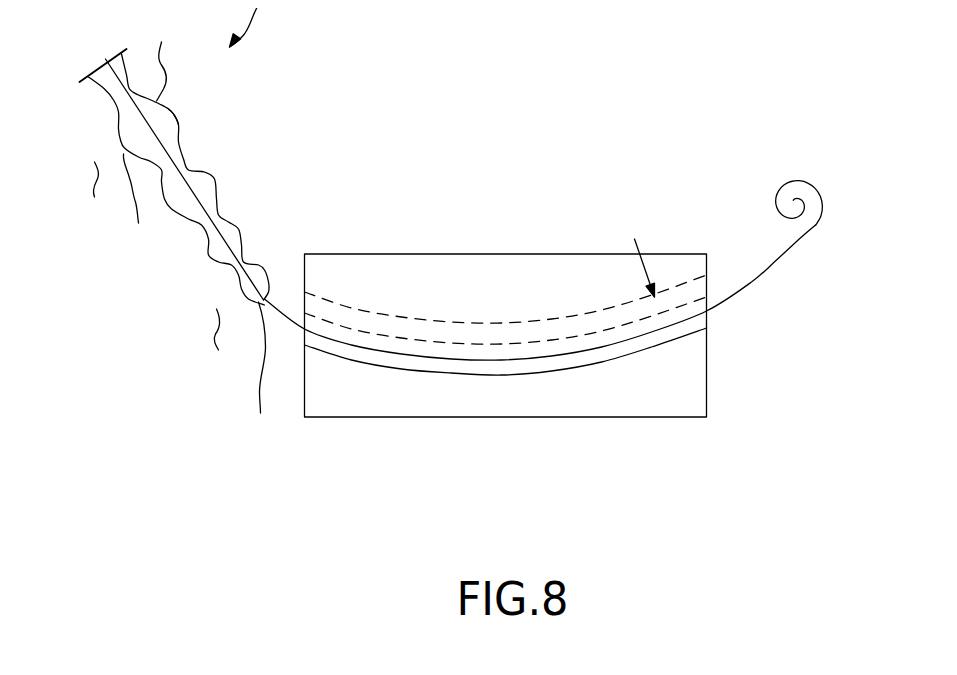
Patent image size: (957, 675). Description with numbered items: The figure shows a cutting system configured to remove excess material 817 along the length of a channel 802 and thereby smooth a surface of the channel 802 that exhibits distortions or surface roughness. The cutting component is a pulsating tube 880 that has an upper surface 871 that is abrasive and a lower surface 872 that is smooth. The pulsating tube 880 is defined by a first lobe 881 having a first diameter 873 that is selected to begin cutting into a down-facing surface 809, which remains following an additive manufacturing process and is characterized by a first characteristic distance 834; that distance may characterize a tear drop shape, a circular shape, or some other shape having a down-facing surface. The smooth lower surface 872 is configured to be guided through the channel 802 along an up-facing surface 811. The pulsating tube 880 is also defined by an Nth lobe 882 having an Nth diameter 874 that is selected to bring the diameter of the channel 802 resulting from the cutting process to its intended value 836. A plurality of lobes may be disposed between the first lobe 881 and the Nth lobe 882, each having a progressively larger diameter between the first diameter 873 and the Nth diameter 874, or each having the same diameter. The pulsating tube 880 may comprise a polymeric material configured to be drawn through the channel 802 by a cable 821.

The channel 802 is at (595, 297).
The down-facing surface 809 is at (332, 320).
The up-facing surface 811 is at (563, 368).
The excess material 817 is at (532, 331).
The cable 821 is at (773, 257).
The first characteristic distance 834 is at (322, 353).
The intended value 836 is at (672, 343).
The upper surface 871 is at (177, 123).
The lower surface 872 is at (135, 208).
The first diameter 873 is at (235, 292).
The Nth diameter 874 is at (117, 143).
The pulsating tube 880 is at (233, 175).
The first lobe 881 is at (265, 376).
The Nth lobe 882 is at (171, 57).